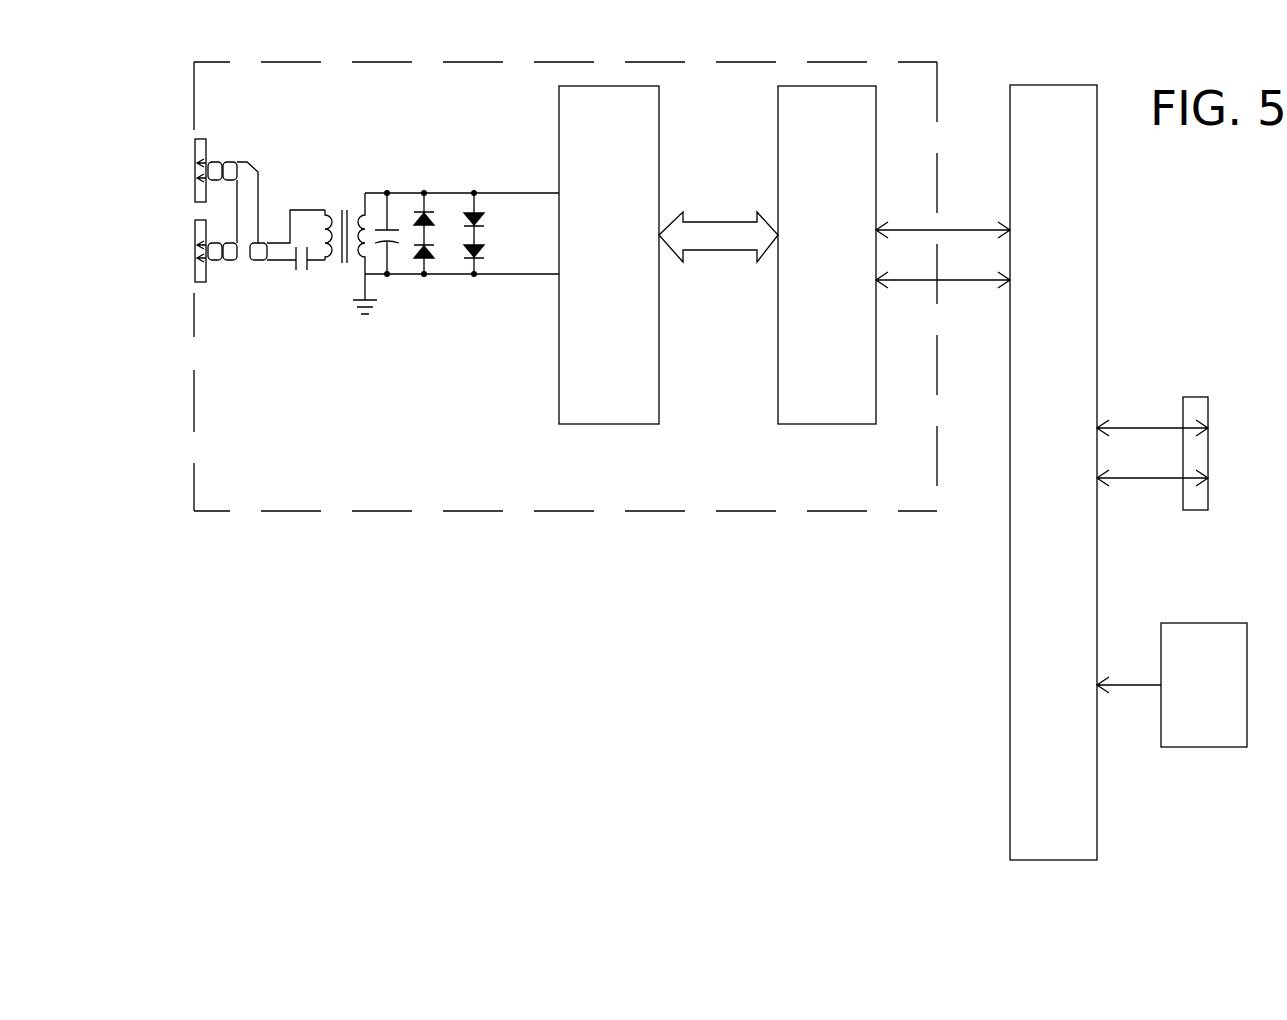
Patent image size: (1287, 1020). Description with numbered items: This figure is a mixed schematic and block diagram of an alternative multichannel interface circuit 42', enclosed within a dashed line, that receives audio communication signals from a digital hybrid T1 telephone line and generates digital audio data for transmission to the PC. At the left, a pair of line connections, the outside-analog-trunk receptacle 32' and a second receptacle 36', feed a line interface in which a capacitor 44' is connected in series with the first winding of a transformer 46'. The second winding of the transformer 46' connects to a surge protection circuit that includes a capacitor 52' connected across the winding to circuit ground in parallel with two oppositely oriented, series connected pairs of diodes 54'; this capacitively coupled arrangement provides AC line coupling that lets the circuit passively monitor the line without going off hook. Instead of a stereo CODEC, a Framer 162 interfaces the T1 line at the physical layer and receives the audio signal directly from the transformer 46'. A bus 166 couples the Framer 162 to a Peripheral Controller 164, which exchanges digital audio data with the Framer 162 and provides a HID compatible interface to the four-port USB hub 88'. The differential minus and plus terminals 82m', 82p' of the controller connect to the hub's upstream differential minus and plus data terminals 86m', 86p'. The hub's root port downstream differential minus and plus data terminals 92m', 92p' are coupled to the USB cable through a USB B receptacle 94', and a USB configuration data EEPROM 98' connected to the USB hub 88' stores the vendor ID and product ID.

The multichannel interface circuit 42' is at (547, 286).
The outside-analog-trunk receptacle 32' is at (181, 178).
The second telephone line connector 36' is at (181, 261).
The capacitor 44' is at (283, 278).
The transformer 46' is at (333, 248).
The capacitor 52' is at (400, 219).
The diodes 54' is at (449, 213).
The Framer 162 is at (598, 123).
The Peripheral Controller 164 is at (815, 123).
The bus 166 is at (690, 222).
The USB differential input/output minus terminal 82m' is at (908, 213).
The USB differential plus terminal 82p' is at (908, 298).
The USB upstream differential minus data terminal 86m' is at (976, 212).
The USB upstream differential plus data terminal 86p' is at (977, 298).
The 4-port USB hub 88' is at (1053, 472).
The root port USB downstream differential minus data terminal 92m' is at (1152, 410).
The root port USB downstream differential plus data terminal 92p' is at (1152, 496).
The USB "B" receptacle 94' is at (1217, 436).
The USB configuration data EEPROM 98' is at (1178, 667).